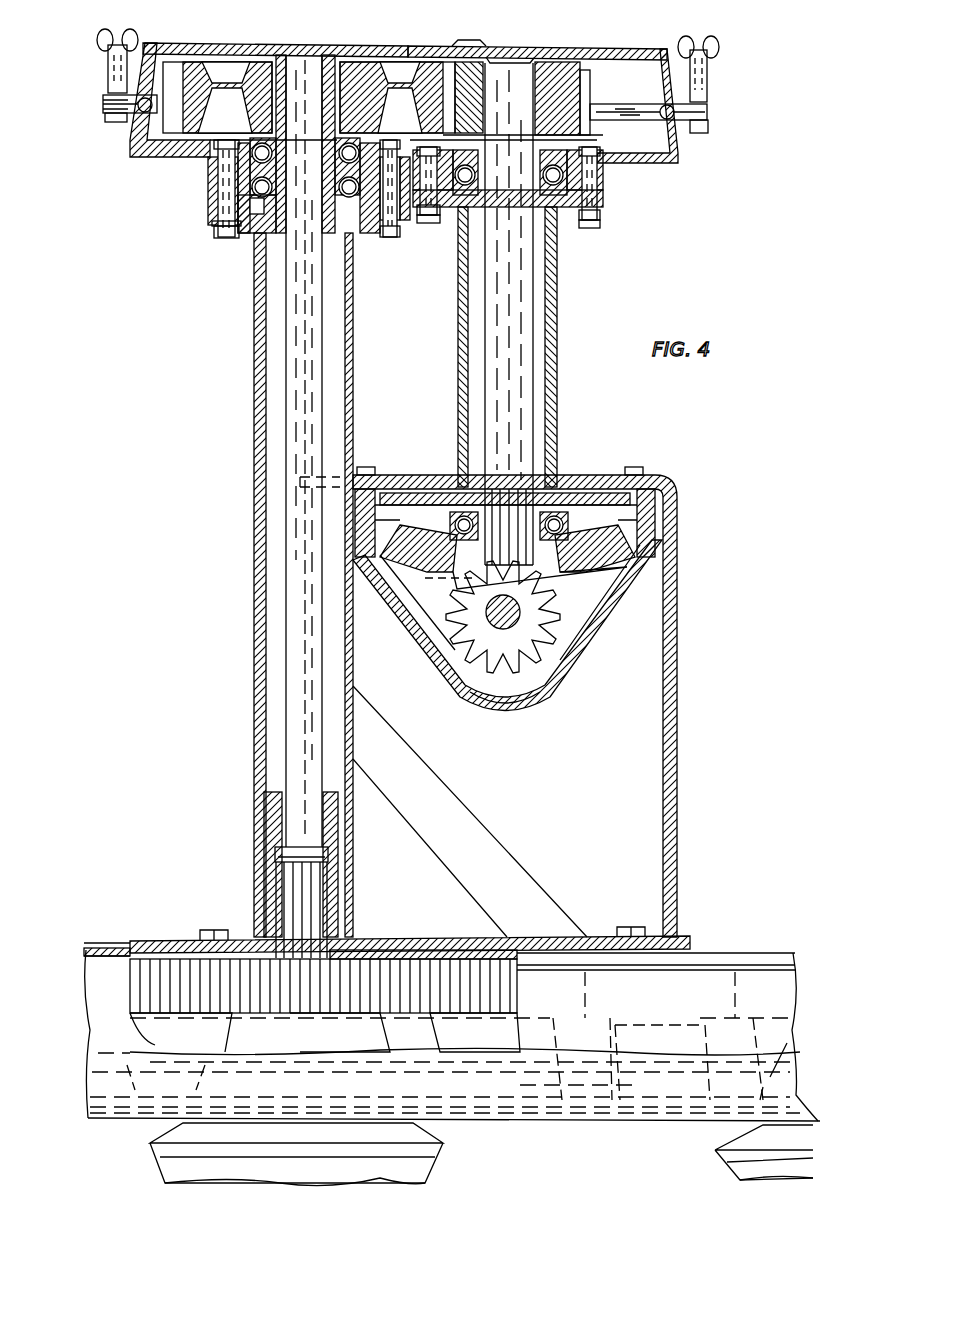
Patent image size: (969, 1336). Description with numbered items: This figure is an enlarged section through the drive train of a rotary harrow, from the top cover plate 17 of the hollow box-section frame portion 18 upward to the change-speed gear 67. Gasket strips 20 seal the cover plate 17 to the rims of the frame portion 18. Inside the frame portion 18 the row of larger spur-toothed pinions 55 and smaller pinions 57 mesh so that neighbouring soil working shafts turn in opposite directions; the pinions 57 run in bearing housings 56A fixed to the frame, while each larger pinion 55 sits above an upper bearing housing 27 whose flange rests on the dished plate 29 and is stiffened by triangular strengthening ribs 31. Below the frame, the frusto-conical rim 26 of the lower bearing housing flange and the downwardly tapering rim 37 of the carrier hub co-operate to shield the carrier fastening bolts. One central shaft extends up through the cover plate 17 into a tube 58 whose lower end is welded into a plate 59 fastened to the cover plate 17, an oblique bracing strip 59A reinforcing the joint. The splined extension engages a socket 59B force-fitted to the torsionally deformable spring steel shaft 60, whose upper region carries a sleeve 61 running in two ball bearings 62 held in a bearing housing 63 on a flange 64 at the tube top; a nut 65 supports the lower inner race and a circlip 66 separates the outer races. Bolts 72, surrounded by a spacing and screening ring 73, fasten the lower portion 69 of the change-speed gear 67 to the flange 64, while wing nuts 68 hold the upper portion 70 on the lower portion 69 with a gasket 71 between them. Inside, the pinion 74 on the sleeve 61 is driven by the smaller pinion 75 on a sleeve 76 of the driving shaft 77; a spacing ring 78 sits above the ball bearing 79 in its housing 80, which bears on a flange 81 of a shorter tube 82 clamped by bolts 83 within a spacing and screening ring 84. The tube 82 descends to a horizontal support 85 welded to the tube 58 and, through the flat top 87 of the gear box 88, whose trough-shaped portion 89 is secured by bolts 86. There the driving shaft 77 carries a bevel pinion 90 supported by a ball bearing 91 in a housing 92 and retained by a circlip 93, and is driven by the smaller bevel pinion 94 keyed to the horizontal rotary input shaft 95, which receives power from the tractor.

The top cover plate 17 is at (160, 938).
The hollow box-section frame portion 18 is at (598, 1132).
The gasket strips 20 is at (98, 962).
The frusto-conical rim 26 is at (430, 1132).
The upper bearing housing 27 is at (222, 1018).
The dished plate 29 is at (766, 1058).
The strengthening ribs 31 is at (380, 1022).
The frustoconical rim 37 is at (430, 1172).
The spur-toothed pinion 55 is at (200, 1013).
The bearing housings 56A is at (548, 1082).
The spur-toothed pinion 57 is at (448, 1016).
The tube 58 is at (252, 650).
The plate 59 is at (210, 928).
The bracing strip 59A is at (462, 880).
The socket 59B is at (338, 836).
The torsionally deformable spring steel shaft 60 is at (284, 552).
The sleeve 61 is at (285, 92).
The ball bearings 62 is at (272, 165).
The bearing housing 63 is at (388, 240).
The flange 64 is at (212, 232).
The nut 65 is at (248, 232).
The circlip 66 is at (240, 168).
The change-speed gear 67 is at (232, 42).
The wing nuts 68 is at (138, 42).
The lower portion 69 is at (680, 150).
The upper portion 70 is at (630, 50).
The gasket 71 is at (710, 114).
The bolts 72 is at (220, 238).
The spacing and screening ring 73 is at (208, 200).
The spur-toothed pinion 74 is at (372, 62).
The spur-toothed pinion 75 is at (470, 62).
The sleeve 76 is at (542, 64).
The driving shaft 77 is at (535, 345).
The spacing ring 78 is at (570, 148).
The ball bearing 79 is at (478, 182).
The bearing housing 80 is at (450, 205).
The flange 81 is at (575, 210).
The tube 82 is at (458, 340).
The bolts 83 is at (420, 228).
The spacing and screening ring 84 is at (602, 188).
The support 85 is at (620, 476).
The bolts 86 is at (368, 466).
The top 87 is at (580, 495).
The gear box 88 is at (580, 660).
The trough-shaped portion 89 is at (535, 705).
The bevel pinion 90 is at (604, 580).
The ball bearing 91 is at (460, 492).
The housing 92 is at (448, 492).
The circlip 93 is at (455, 548).
The bevel pinion 94 is at (470, 660).
The rotary input shaft 95 is at (525, 600).